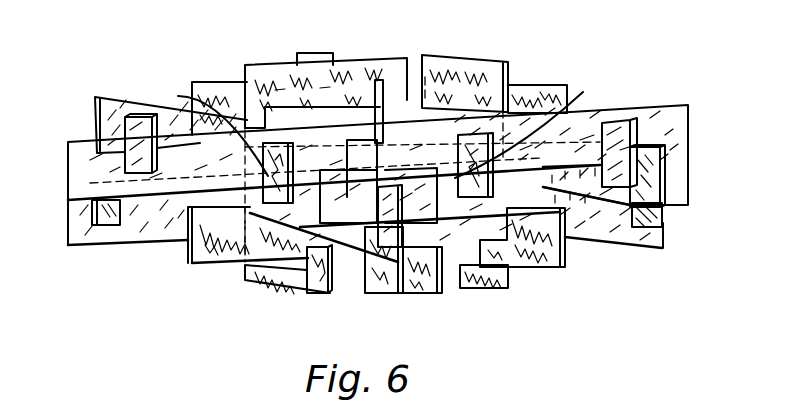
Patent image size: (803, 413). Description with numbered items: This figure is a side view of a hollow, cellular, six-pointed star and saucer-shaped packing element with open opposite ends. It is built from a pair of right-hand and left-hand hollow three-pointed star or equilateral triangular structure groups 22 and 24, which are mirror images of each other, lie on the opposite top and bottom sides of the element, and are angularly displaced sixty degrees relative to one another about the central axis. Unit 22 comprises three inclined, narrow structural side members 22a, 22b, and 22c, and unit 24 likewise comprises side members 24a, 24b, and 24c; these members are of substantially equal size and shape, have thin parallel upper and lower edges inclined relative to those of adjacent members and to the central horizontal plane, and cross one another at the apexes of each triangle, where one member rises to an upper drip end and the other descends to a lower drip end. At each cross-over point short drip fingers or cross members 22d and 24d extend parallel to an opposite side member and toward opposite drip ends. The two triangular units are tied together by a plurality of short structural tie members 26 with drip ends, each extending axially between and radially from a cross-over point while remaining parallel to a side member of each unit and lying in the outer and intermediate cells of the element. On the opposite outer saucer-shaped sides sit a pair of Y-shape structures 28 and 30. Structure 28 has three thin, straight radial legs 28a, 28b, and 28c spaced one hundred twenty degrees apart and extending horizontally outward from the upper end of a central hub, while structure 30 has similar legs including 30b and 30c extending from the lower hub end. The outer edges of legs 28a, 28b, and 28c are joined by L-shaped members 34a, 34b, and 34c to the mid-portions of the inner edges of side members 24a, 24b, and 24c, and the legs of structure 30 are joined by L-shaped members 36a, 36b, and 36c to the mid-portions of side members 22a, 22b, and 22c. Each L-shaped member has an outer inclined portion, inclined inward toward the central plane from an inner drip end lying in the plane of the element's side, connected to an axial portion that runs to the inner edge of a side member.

The triangular structure group 22 is at (668, 100).
The structural side member 22a is at (650, 173).
The structural side member 22b is at (129, 103).
The structural side member 22c is at (642, 110).
The drip finger 22d is at (140, 148).
The triangular structure group 24 is at (63, 228).
The structural side member 24a is at (366, 213).
The structural side member 24b is at (623, 240).
The structural side member 24c is at (143, 232).
The drip finger 24d is at (110, 216).
The structural tie member 26 is at (374, 141).
The Y-shape structure 28 is at (534, 78).
The radial structural member 28a is at (388, 98).
The radial structural member 28b is at (557, 90).
The radial structural member 28c is at (218, 86).
The Y-shape structure 30 is at (572, 243).
The radial structural member 30b is at (210, 252).
The radial structural member 30c is at (543, 255).
The L-shaped member 34a is at (360, 62).
The L-shaped member 34b is at (485, 67).
The L-shaped member 34c is at (307, 62).
The L-shaped member 36a is at (492, 288).
The L-shaped member 36b is at (295, 283).
The L-shaped member 36c is at (437, 290).